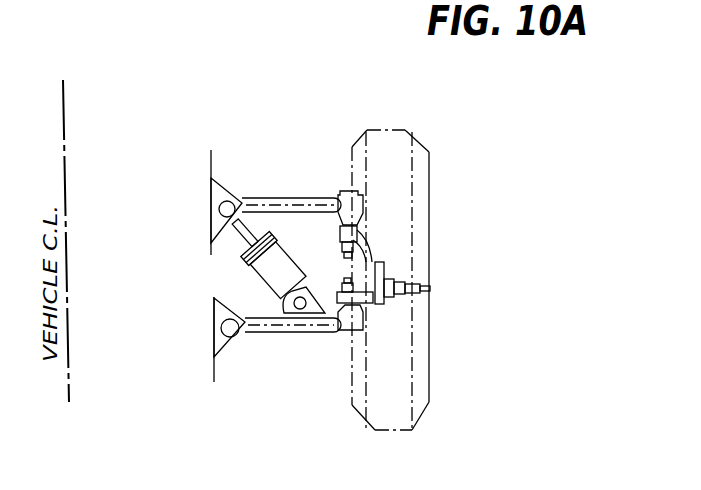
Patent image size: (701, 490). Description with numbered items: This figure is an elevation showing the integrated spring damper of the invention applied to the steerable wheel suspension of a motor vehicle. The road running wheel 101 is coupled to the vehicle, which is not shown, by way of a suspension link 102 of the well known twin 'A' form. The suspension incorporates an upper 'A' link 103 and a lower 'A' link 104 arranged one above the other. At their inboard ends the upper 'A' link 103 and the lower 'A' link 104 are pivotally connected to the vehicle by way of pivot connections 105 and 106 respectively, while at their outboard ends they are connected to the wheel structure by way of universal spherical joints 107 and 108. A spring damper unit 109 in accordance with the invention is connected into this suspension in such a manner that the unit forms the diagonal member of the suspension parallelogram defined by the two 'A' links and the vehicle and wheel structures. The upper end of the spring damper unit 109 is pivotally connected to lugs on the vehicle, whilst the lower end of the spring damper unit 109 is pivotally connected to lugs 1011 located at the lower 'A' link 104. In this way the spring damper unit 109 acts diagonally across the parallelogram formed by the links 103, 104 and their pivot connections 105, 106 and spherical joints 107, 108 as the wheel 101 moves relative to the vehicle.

The road running wheel 101 is at (395, 190).
The suspension link 102 is at (287, 228).
The upper 'A' link 103 is at (310, 195).
The lower 'A' link 104 is at (272, 335).
The pivot connection 105 is at (216, 220).
The pivot connection 106 is at (216, 331).
The universal spherical joint 107 is at (337, 190).
The universal spherical joint 108 is at (347, 338).
The spring damper unit 109 is at (278, 283).
The lugs 1011 is at (308, 335).